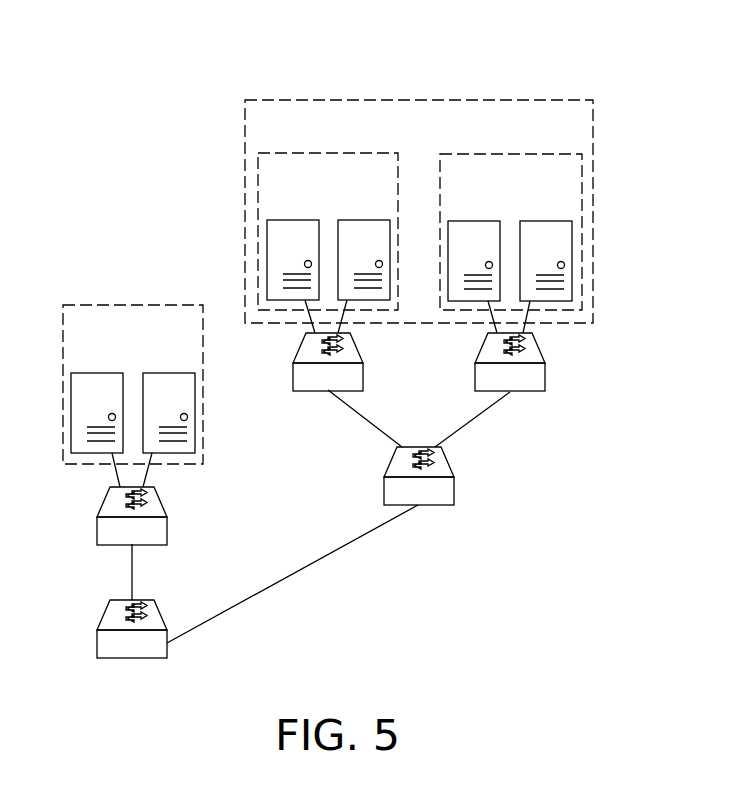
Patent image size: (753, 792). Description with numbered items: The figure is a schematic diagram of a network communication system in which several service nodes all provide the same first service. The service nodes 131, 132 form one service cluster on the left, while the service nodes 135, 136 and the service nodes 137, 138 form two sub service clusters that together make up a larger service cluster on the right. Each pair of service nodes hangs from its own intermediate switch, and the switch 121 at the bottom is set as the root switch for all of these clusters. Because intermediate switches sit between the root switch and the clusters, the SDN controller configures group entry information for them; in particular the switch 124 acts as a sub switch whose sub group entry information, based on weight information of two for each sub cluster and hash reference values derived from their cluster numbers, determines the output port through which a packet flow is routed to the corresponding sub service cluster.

The switch 121 is at (155, 607).
The switch 124 is at (453, 492).
The service node 131 is at (97, 373).
The service node 132 is at (169, 373).
The service node 135 is at (292, 220).
The service node 136 is at (363, 220).
The service node 137 is at (473, 221).
The service node 138 is at (545, 221).